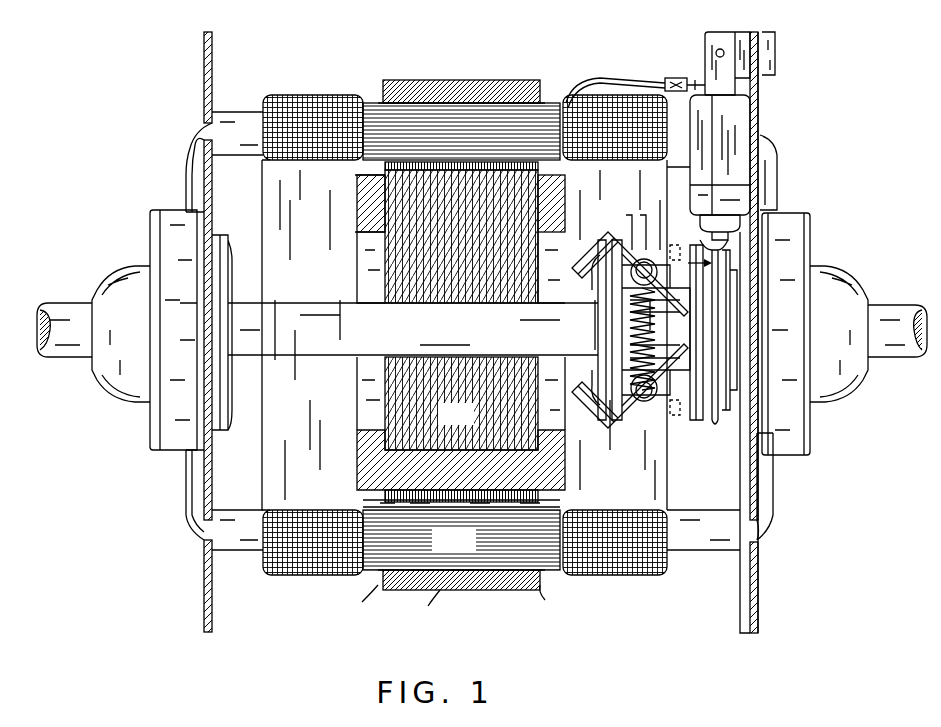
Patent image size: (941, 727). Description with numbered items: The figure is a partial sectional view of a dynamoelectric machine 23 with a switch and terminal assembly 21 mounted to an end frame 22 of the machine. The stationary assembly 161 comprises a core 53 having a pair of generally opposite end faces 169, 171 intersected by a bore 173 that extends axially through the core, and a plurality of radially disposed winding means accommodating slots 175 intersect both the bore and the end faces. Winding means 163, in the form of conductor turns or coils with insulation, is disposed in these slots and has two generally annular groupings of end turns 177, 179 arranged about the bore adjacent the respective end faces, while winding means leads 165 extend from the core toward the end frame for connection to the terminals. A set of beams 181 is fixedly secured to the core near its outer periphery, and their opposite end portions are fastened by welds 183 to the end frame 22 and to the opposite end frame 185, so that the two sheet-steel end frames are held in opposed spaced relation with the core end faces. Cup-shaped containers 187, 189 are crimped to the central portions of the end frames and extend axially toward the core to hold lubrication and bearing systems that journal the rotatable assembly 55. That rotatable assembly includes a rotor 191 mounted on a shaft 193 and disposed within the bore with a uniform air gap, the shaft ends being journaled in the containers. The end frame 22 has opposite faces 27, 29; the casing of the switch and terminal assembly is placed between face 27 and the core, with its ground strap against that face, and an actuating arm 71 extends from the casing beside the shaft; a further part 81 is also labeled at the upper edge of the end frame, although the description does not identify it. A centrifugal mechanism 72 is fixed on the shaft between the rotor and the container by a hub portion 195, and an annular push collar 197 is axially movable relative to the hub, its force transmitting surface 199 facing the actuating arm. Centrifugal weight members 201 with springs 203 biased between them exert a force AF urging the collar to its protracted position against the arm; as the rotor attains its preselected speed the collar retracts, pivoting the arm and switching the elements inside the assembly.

The dynamoelectric machine 23 is at (112, 125).
The end frame 185 is at (204, 72).
The beams 181 is at (248, 118).
The welds 183 is at (186, 526).
The stationary assembly 161 is at (175, 555).
The container 189 is at (222, 236).
The shaft 193 is at (433, 340).
The container 187 is at (775, 418).
The rotor 191 is at (472, 425).
The winding means 163 is at (436, 552).
The winding means accommodating slots 175 is at (490, 568).
The core 53 is at (423, 609).
The end turns 177 is at (303, 578).
The end turns 179 is at (625, 577).
The end face 169 is at (358, 605).
The end face 171 is at (548, 604).
The bore 173 is at (372, 498).
The rotatable assembly 55 is at (348, 215).
The winding means leads 165 is at (607, 78).
The switch and terminal assembly 21 is at (717, 137).
The retaining tab 81 is at (772, 152).
The opposite face 29 is at (760, 602).
The opposite face 27 is at (740, 608).
The end frame 22 is at (762, 578).
The actuating arm 71 is at (722, 228).
The push collar 197 is at (700, 412).
The force transmitting surface 199 is at (722, 420).
The hub portion 195 is at (597, 336).
The springs 203 is at (652, 432).
The centrifugal weight members 201 is at (585, 266).
The centrifugal mechanism 72 is at (606, 215).
The force AF is at (700, 258).